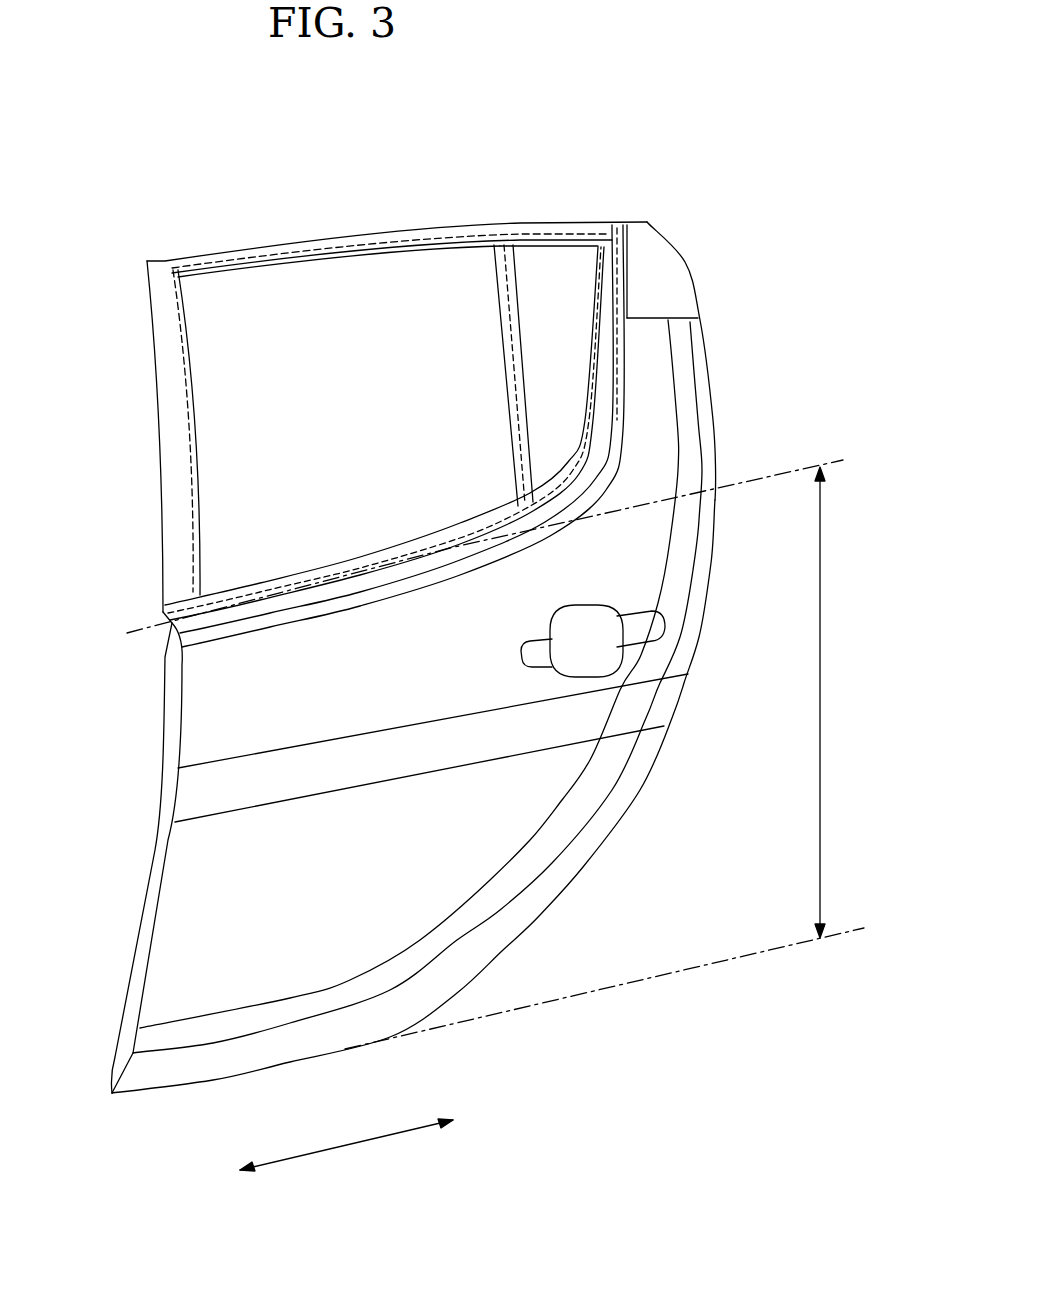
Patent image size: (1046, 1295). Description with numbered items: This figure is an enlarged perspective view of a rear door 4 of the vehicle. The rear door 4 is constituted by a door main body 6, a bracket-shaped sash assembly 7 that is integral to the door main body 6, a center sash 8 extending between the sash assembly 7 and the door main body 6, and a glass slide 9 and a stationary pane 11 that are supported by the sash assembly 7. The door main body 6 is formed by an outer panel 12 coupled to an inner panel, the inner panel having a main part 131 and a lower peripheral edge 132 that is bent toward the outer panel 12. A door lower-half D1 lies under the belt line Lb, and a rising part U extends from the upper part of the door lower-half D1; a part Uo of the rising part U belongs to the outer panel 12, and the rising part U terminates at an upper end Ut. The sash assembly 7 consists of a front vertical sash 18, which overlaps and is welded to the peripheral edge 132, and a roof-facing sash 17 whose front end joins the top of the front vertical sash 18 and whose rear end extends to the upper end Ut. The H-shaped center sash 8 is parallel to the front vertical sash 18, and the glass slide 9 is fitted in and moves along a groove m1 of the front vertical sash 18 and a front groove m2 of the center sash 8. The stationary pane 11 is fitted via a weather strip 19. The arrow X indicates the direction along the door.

The rear door 4 is at (725, 268).
The door main body 6 is at (497, 853).
The sash assembly 7 is at (150, 403).
The center sash 8 is at (506, 329).
The glass slide 9 is at (393, 288).
The stationary pane 11 is at (550, 270).
The outer panel 12 is at (206, 728).
The roof-facing sash 17 is at (303, 250).
The front vertical sash 18 is at (166, 522).
The weather strip 19 is at (594, 283).
The main part 131 is at (170, 652).
The lower peripheral edge 132 is at (143, 940).
The upper end of the rising part Ut is at (649, 231).
The part of the rising part of the outer panel Uo is at (638, 362).
The rising part U is at (684, 432).
The belt line Lb is at (784, 473).
The door lower-half D1 is at (823, 834).
The groove of the front vertical sash m1 is at (207, 524).
The front groove of the center sash m2 is at (505, 432).
The vehicle front-rear direction X is at (370, 1138).